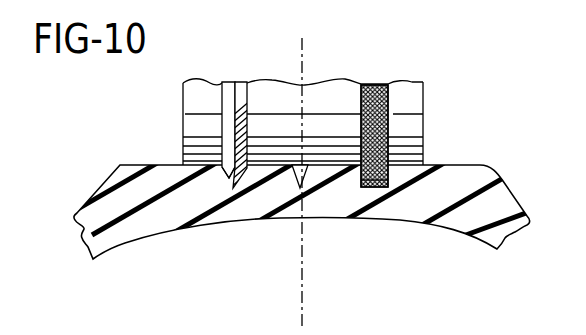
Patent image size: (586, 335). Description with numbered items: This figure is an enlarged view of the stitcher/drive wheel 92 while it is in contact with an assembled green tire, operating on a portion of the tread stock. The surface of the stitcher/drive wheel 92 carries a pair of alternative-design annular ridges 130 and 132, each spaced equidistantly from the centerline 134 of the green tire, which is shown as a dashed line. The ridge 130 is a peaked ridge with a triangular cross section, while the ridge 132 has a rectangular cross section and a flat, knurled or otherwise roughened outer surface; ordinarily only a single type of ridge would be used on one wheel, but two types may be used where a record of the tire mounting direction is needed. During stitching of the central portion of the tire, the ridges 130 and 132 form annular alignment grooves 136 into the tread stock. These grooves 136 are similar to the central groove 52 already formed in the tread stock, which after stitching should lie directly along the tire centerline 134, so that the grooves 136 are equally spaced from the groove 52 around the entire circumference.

The central groove 52 is at (293, 168).
The stitcher/drive wheel 92 is at (184, 104).
The peaked ridge 130 is at (222, 97).
The rectangular ridge 132 is at (380, 86).
The tire centerline 134 is at (302, 308).
The annular alignment grooves 136 is at (229, 170).